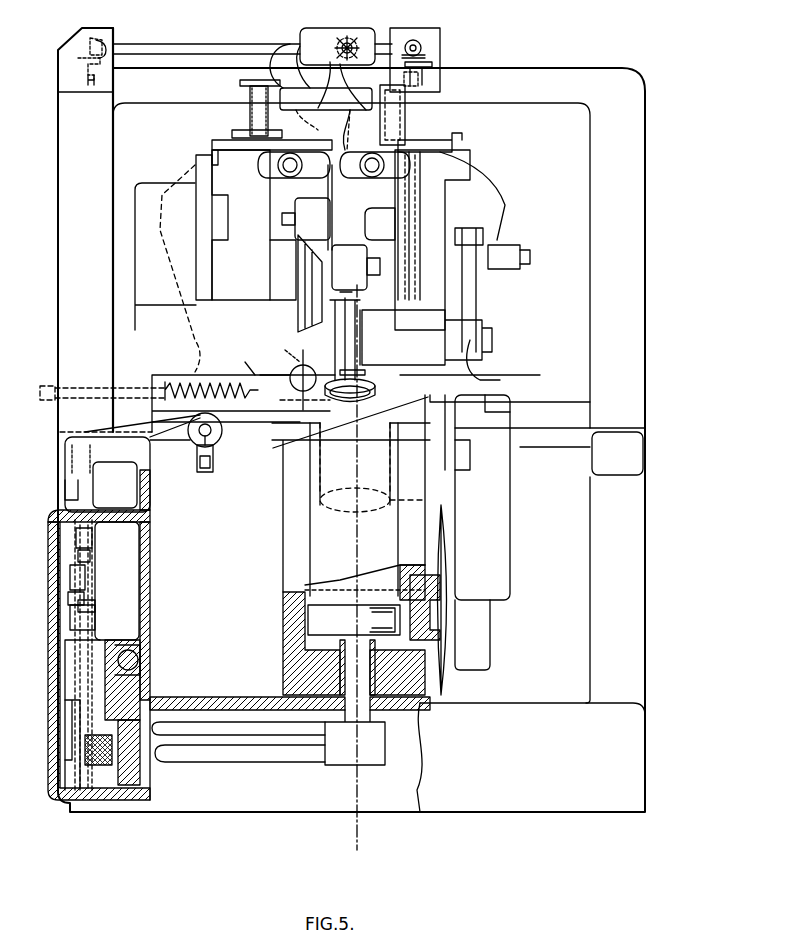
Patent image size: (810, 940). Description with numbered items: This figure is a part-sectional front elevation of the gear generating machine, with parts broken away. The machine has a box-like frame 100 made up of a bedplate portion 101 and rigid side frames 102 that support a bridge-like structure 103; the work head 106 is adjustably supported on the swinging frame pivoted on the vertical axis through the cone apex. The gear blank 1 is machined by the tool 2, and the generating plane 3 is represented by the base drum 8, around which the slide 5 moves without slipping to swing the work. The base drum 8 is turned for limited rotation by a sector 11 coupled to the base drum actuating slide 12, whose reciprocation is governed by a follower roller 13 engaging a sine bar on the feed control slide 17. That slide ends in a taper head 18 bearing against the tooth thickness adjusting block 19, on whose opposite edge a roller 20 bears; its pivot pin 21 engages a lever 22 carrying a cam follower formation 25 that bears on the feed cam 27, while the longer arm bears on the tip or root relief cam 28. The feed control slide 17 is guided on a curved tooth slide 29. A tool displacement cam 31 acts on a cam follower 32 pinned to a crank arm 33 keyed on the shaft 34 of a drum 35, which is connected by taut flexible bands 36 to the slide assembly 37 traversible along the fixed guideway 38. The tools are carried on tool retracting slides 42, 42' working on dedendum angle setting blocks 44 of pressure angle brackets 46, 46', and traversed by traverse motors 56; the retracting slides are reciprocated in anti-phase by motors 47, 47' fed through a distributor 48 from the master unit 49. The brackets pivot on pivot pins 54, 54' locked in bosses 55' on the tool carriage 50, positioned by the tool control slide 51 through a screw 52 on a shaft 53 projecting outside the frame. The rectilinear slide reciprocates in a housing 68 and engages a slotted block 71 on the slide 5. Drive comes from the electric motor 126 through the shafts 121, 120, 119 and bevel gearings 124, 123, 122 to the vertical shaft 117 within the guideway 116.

The frame 100 is at (645, 755).
The bedplate portion 101 is at (252, 708).
The side frames 102 is at (68, 490).
The bridge-like structure 103 is at (68, 182).
The work head 106 is at (328, 520).
The vertical guideway 116 is at (440, 60).
The vertical shaft 117 is at (432, 86).
The shaft 119 is at (84, 80).
The shaft 120 is at (215, 44).
The shaft 121 is at (384, 42).
The bevel gearing 122 is at (92, 45).
The bevel gearing 123 is at (348, 38).
The bevel gearing 124 is at (430, 42).
The electric motor 126 is at (128, 495).
The gear blank 1 is at (378, 392).
The tool 2 is at (355, 302).
The generating plane 3 is at (252, 372).
The slide 5 is at (440, 588).
The base drum 8 is at (345, 618).
The sector 11 is at (172, 765).
The base drum actuating slide 12 is at (150, 696).
The follower roller 13 is at (95, 766).
The feed control slide 17 is at (72, 645).
The taper head 18 is at (75, 630).
The tooth thickness adjusting block 19 is at (96, 606).
The roller 20 is at (96, 592).
The pivot pin 21 is at (300, 300).
The lever 22 is at (70, 598).
The cam follower formation 25 is at (80, 580).
The feed cam 27 is at (78, 548).
The tip or root relief cam 28 is at (92, 556).
The curved tooth slide 29 is at (65, 722).
The tool displacement cam 31 is at (80, 528).
The cam follower 32 is at (68, 460).
The crank arm 33 is at (168, 440).
The shaft 34 is at (213, 455).
The drum 35 is at (215, 448).
The taut flexible bands 36 is at (222, 435).
The slide assembly 37 is at (152, 416).
The fixed guideway 38 is at (553, 402).
The tool retracting slide 42 is at (316, 225).
The tool retracting slide 42' is at (248, 112).
The dedendum angle setting block 44 is at (225, 145).
The pressure angle bracket 46 is at (421, 240).
The pressure angle bracket 46' is at (262, 226).
The motor 47 is at (411, 115).
The motor 47' is at (245, 89).
The distributor 48 is at (340, 112).
The double-acting piston and cylinder master unit 49 is at (138, 660).
The tool carriage 50 is at (172, 378).
The tool control slide 51 is at (300, 402).
The screw 52 is at (220, 382).
The shaft 53 is at (135, 388).
The pivot pin 54 is at (385, 361).
The pivot pin 54' is at (297, 377).
The bosses 55' is at (293, 343).
The traverse motor 56 is at (318, 198).
The housing 68 is at (505, 515).
The block 71 is at (443, 548).